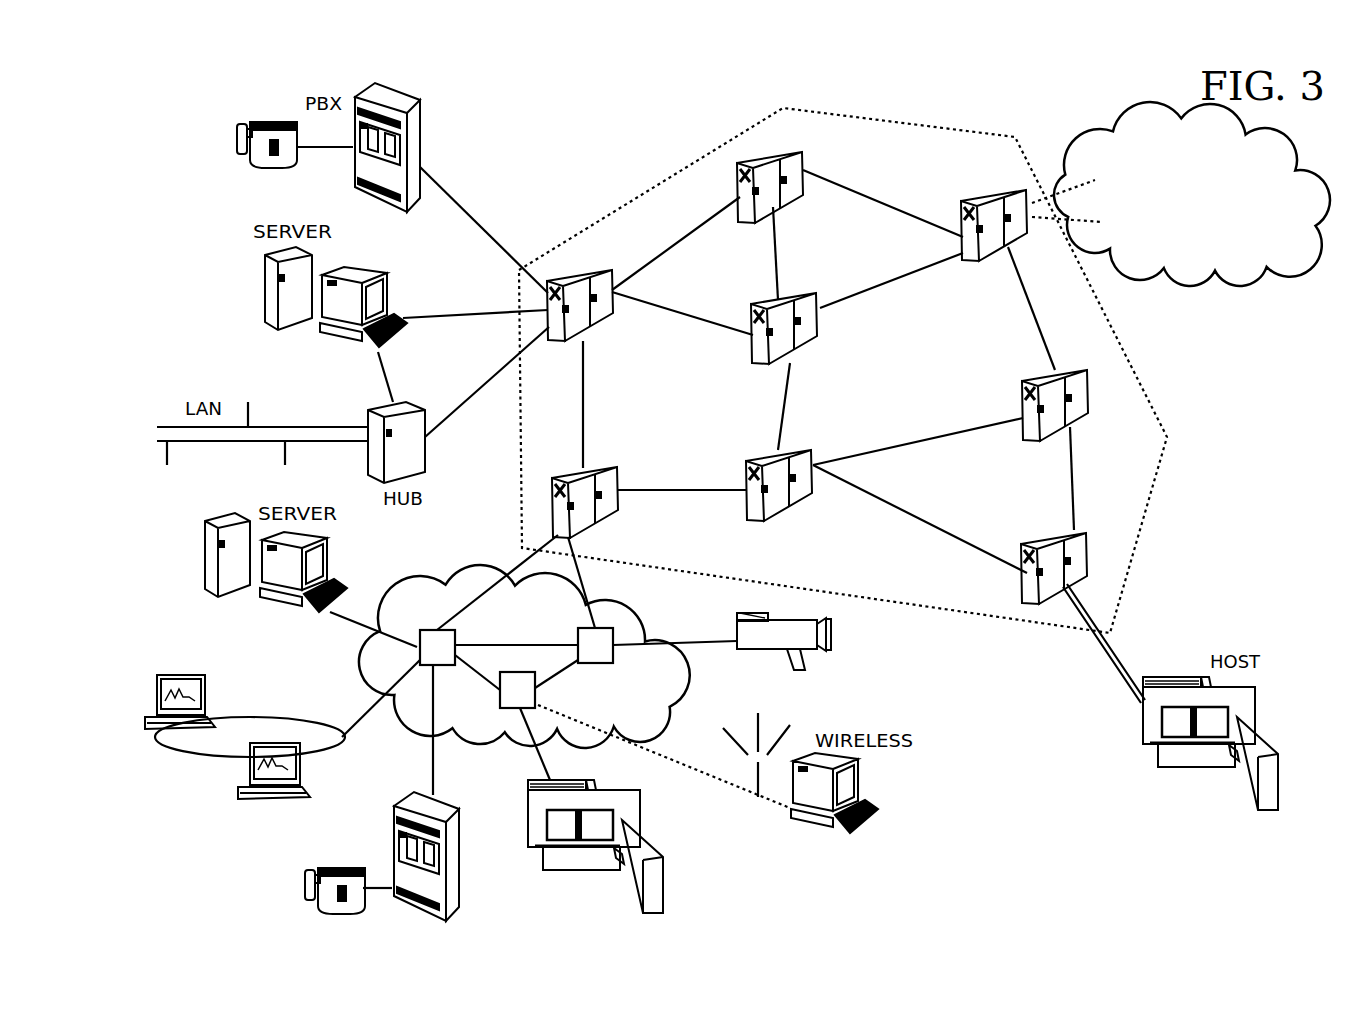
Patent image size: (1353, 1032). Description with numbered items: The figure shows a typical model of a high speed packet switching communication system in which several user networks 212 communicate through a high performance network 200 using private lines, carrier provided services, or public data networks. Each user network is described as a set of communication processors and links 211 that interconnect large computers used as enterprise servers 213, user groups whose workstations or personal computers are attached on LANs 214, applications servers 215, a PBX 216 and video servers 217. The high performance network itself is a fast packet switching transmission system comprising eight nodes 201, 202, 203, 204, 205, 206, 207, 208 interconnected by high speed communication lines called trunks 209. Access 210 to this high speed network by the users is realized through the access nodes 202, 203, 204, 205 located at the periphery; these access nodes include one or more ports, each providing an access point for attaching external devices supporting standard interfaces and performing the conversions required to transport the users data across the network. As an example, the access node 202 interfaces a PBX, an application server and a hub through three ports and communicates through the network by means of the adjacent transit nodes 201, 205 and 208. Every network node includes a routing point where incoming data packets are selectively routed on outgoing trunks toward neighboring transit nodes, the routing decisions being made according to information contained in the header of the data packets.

The high performance network 200 is at (663, 182).
The transit node 201 is at (797, 152).
The access node 202 is at (602, 270).
The access node 203 is at (1037, 535).
The access node 204 is at (1005, 190).
The access node 205 is at (608, 465).
The network node 206 is at (805, 450).
The network node 207 is at (1033, 377).
The transit node 208 is at (810, 297).
The trunk 209 is at (885, 282).
The access 210 is at (417, 317).
The communication processors and links 211 is at (432, 587).
The user network 212 is at (1105, 125).
The enterprise server 213 is at (657, 840).
The LAN 214 is at (250, 717).
The applications server 215 is at (215, 522).
The PBX 216 is at (410, 907).
The video server 217 is at (780, 617).